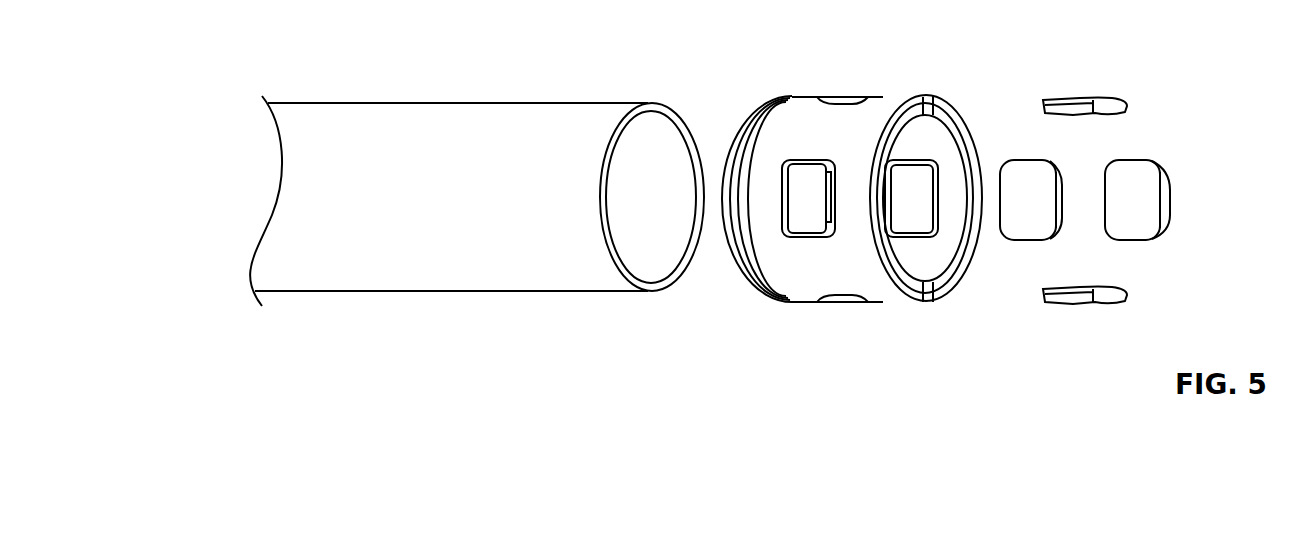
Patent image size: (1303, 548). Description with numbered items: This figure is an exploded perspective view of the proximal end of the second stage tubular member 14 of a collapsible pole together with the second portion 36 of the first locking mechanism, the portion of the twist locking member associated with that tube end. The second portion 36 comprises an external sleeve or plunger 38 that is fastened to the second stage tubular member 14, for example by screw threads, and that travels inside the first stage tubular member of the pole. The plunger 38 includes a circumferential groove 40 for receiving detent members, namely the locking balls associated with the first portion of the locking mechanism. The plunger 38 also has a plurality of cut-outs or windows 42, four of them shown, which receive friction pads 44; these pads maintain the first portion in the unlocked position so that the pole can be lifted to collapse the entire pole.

The second stage tubular member 14 is at (433, 123).
The second portion 36 is at (722, 60).
The plunger 38 is at (817, 302).
The circumferential groove 40 is at (753, 110).
The windows 42 is at (784, 200).
The friction pads 44 is at (1127, 108).